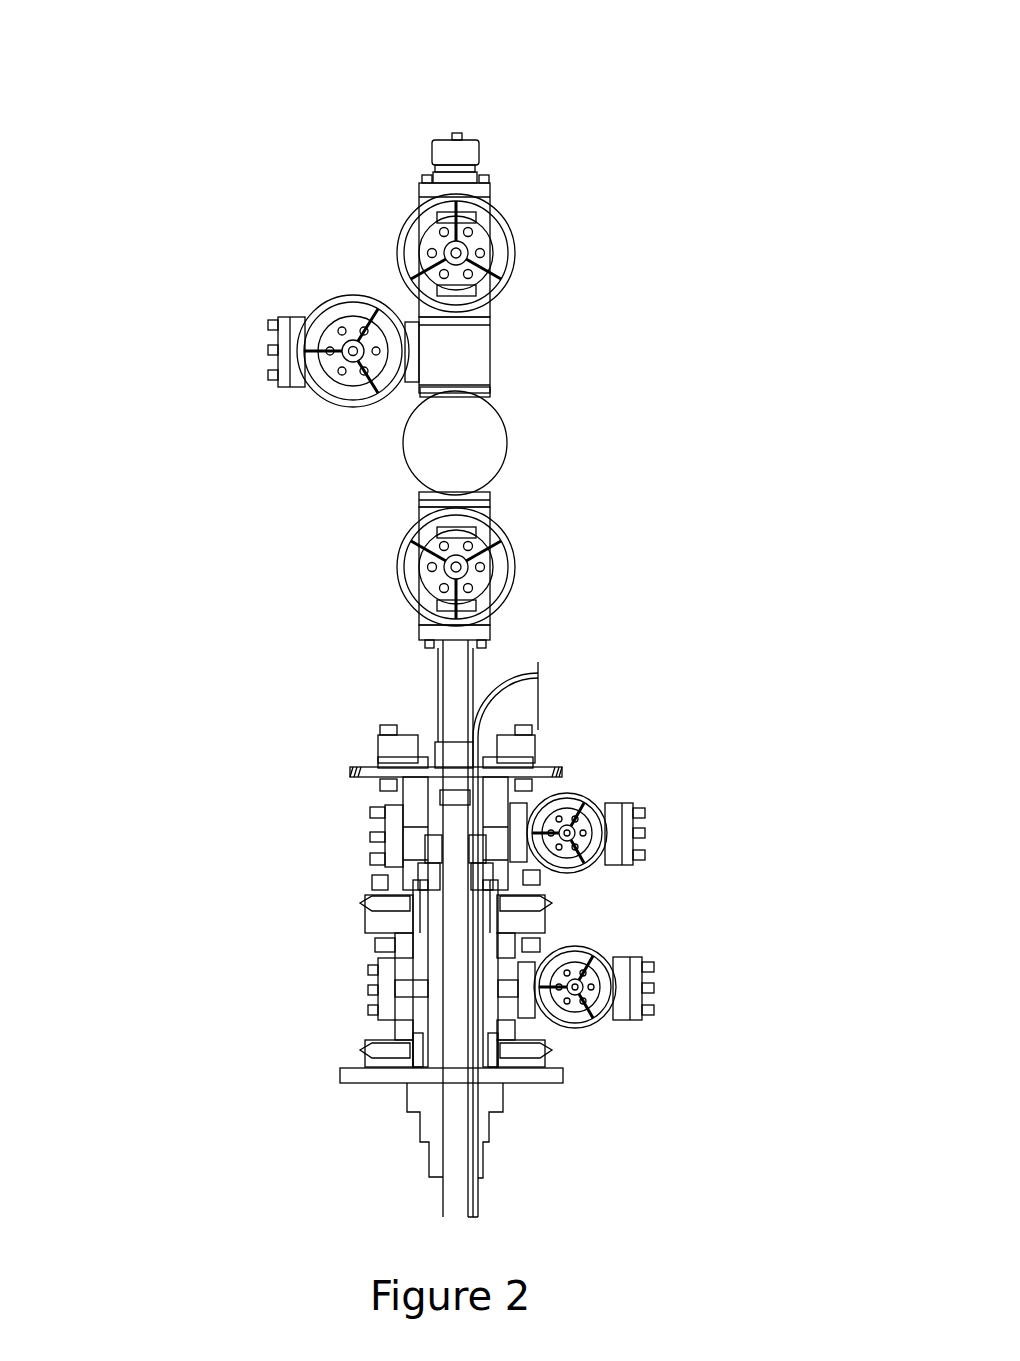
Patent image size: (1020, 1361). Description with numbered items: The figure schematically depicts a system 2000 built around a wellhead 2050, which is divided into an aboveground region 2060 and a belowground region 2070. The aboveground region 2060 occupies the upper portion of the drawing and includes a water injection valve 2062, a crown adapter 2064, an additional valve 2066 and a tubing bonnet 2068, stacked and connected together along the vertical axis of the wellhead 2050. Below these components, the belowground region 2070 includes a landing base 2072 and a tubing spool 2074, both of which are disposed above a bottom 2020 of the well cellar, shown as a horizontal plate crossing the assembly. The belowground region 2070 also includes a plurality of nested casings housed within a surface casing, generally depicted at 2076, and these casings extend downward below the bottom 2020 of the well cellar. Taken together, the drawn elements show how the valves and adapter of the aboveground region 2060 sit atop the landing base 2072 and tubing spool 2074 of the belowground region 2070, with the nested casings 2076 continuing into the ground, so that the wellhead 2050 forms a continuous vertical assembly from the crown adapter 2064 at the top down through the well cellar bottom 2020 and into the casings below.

The system 2000 is at (203, 64).
The bottom of the well cellar 2020 is at (565, 1072).
The wellhead 2050 is at (695, 639).
The aboveground region 2060 is at (205, 125).
The water injection valve 2062 is at (352, 293).
The crown adapter 2064 is at (458, 133).
The additional valve 2066 is at (513, 553).
The tubing bonnet 2068 is at (540, 702).
The belowground region 2070 is at (205, 747).
The landing base 2072 is at (641, 959).
The tubing spool 2074 is at (632, 802).
The surface casing 2076 is at (510, 1160).